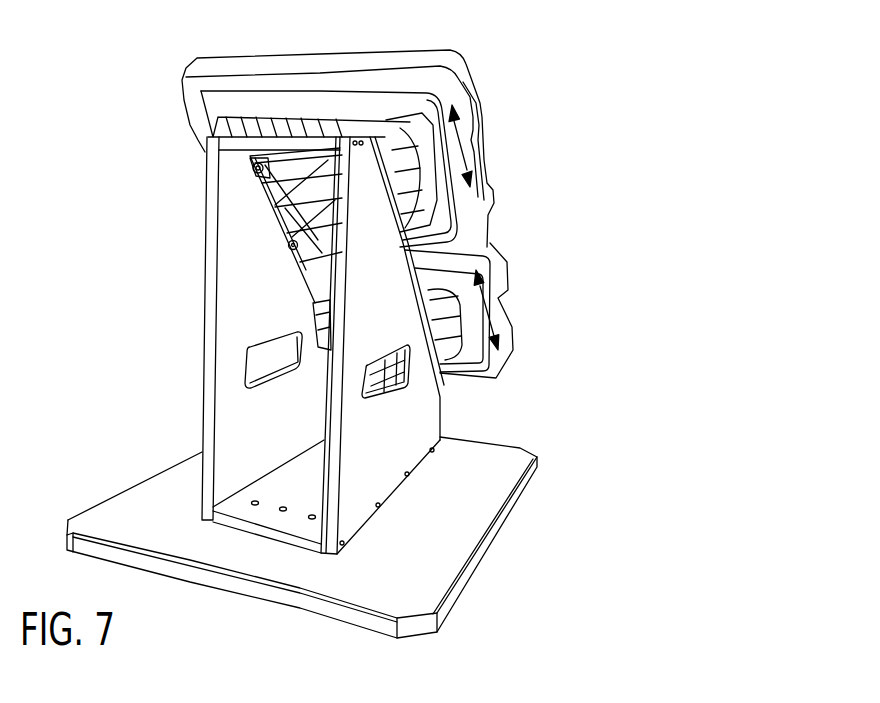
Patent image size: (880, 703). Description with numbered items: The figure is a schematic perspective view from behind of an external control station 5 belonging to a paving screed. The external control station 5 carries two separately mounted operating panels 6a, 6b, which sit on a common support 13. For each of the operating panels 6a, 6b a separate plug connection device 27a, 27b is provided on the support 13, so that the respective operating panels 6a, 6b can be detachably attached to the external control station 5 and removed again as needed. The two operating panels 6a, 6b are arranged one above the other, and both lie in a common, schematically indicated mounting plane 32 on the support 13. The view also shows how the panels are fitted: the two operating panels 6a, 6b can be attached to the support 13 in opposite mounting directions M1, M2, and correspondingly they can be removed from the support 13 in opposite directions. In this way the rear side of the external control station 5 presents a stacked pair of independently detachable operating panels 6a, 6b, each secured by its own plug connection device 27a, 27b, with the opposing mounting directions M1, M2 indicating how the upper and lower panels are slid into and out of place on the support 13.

The external control station 5 is at (156, 415).
The support 13 is at (200, 168).
The mounting plane 32 is at (322, 133).
The plug connection device 27a is at (261, 223).
The plug connection device 27b is at (305, 318).
The operating panel 6a is at (475, 213).
The operating panel 6b is at (480, 265).
The mounting direction M1 is at (487, 314).
The mounting direction M2 is at (478, 146).